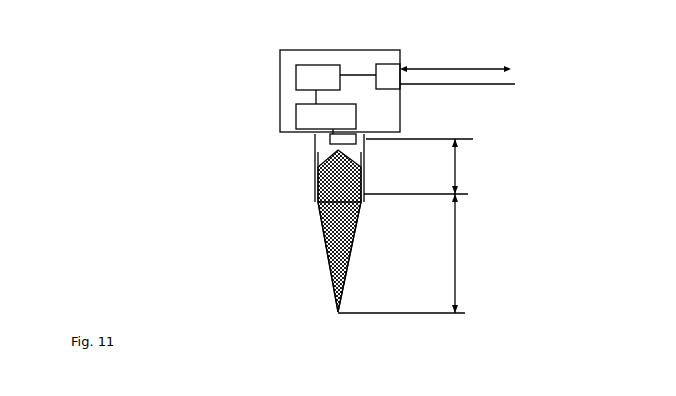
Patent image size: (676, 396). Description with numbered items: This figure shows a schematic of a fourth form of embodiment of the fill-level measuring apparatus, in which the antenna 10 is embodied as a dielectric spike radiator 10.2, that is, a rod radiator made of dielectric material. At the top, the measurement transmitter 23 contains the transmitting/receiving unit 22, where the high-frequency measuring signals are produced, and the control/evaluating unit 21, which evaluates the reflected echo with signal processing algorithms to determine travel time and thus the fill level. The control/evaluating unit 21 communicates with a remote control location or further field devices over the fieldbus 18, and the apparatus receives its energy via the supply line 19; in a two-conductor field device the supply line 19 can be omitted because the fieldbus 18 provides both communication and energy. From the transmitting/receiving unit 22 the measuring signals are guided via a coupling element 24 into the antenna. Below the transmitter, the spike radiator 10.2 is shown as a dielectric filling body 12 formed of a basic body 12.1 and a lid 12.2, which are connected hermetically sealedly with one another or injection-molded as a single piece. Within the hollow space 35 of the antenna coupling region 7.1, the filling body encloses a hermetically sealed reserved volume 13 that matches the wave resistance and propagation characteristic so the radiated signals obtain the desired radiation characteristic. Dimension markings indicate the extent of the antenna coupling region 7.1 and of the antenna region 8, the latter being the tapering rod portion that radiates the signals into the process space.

The antenna coupling region 7.1 is at (453, 169).
The antenna region 8 is at (453, 247).
The antenna 10 is at (163, 136).
The dielectric spike radiator 10.2 is at (354, 181).
The dielectric filling body 12 is at (287, 258).
The basic body 12.1 is at (334, 238).
The lid 12.2 is at (313, 158).
The reserved volume 13 is at (320, 200).
The fieldbus 18 is at (449, 66).
The supply line 19 is at (446, 83).
The control/evaluating unit 21 is at (305, 73).
The transmitting/receiving unit 22 is at (293, 112).
The measurement transmitter 23 is at (355, 117).
The coupling element 24 is at (296, 121).
The hollow space 35 is at (312, 139).